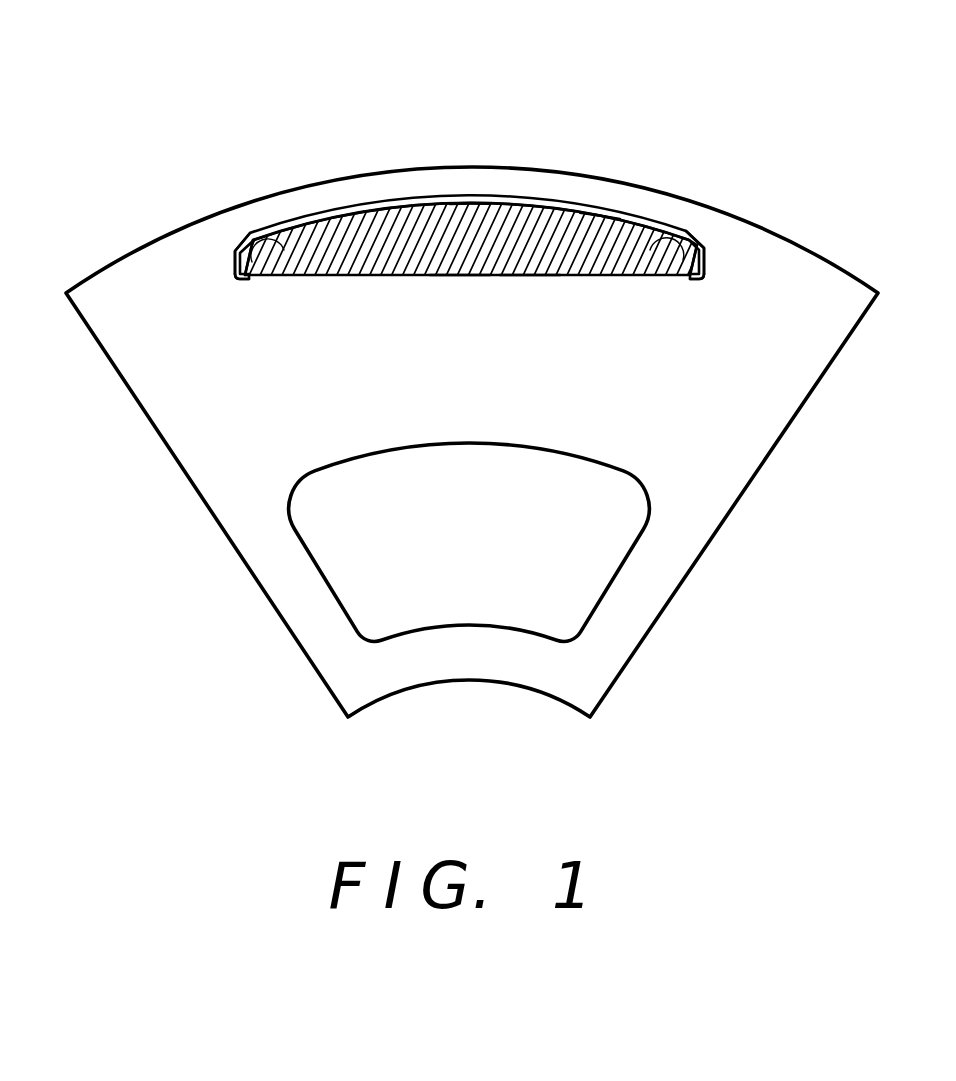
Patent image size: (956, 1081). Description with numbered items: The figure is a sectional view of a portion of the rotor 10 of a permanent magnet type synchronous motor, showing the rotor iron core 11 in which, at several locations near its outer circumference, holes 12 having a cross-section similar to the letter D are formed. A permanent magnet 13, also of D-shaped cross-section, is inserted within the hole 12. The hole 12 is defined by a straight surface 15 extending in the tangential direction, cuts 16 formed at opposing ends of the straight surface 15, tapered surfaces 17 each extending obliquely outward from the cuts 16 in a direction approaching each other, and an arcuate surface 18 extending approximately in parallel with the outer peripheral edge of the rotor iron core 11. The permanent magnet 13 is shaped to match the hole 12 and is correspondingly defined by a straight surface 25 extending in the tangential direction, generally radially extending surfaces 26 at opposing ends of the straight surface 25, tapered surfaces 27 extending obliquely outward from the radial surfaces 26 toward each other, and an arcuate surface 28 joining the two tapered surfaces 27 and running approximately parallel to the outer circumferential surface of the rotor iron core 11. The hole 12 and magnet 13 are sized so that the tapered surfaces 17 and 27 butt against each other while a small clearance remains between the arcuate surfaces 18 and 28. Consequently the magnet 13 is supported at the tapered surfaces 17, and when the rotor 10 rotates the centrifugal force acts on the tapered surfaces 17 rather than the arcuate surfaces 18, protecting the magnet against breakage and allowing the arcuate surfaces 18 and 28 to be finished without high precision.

The rotor 10 is at (472, 187).
The rotor iron core 11 is at (128, 254).
The hole 12 is at (406, 197).
The permanent magnet 13 is at (537, 222).
The straight surface 15 is at (532, 280).
The cut 16 is at (238, 281).
The tapered surface 17 is at (243, 243).
The arcuate surface 18 is at (601, 208).
The straight surface 25 is at (458, 267).
The radially extending surface 26 is at (247, 255).
The tapered surface 27 is at (294, 225).
The arcuate surface 28 is at (468, 212).